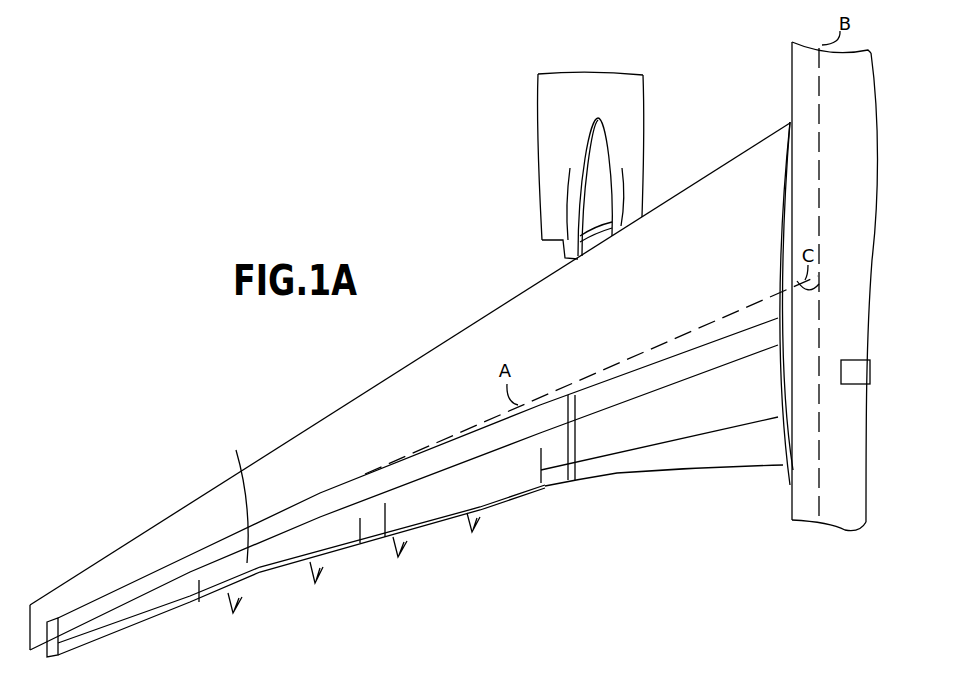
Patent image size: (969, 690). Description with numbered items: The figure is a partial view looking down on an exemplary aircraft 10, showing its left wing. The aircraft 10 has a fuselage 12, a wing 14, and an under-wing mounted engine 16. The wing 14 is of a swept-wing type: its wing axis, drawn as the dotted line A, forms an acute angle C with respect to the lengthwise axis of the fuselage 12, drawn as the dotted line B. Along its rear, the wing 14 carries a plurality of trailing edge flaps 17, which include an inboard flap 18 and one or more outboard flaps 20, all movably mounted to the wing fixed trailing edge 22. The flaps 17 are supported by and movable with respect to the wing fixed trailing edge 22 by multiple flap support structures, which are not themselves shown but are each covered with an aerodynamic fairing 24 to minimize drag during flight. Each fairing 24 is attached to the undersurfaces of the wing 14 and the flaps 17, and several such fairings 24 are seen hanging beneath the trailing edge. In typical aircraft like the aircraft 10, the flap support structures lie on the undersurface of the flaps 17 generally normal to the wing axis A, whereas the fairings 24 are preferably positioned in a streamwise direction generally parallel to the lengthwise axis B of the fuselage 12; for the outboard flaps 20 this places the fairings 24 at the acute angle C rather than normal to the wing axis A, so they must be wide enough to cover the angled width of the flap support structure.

The aircraft 10 is at (785, 118).
The fuselage 12 is at (797, 450).
The wing 14 is at (313, 447).
The under-wing mounted engine 16 is at (543, 122).
The trailing edge flaps 17 is at (620, 465).
The inboard flap 18 is at (673, 455).
The outboard flap 20 is at (427, 495).
The wing fixed trailing edge 22 is at (35, 652).
The aerodynamic fairing 24 is at (470, 528).